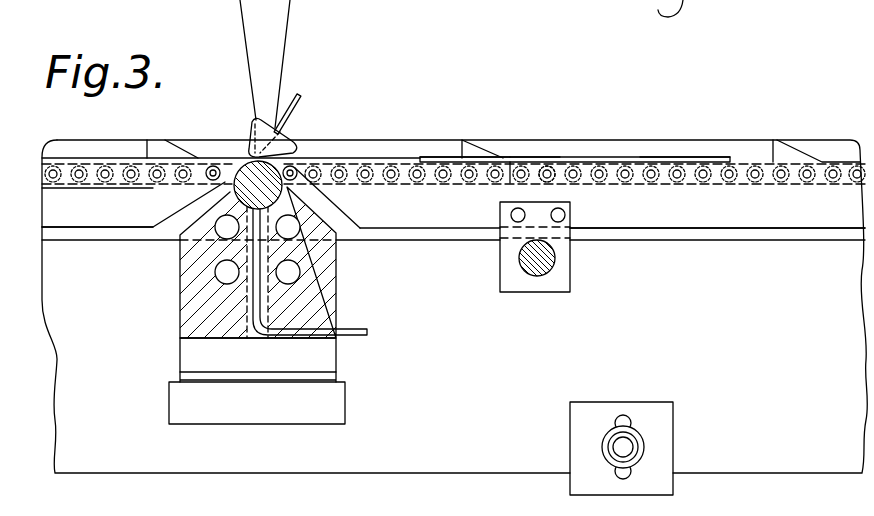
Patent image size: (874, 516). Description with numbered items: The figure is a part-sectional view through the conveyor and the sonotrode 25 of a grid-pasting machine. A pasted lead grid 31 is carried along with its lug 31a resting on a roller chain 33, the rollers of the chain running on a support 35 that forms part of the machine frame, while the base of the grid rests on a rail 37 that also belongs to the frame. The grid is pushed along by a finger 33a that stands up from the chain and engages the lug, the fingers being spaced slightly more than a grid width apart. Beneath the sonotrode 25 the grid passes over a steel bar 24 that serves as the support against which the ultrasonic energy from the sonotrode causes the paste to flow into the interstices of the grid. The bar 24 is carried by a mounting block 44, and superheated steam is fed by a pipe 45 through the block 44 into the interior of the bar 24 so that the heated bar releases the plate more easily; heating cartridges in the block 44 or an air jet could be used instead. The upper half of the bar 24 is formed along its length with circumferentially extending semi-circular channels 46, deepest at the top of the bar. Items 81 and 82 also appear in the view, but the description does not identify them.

The bar 24 is at (290, 167).
The sonotrode 25 is at (283, 18).
The grid 31 is at (528, 157).
The lug 31a is at (443, 158).
The roller chain 33 is at (556, 168).
The finger 33a is at (646, 162).
The support 35 is at (165, 227).
The rail 37 is at (705, 217).
The mounting block 44 is at (325, 262).
The pipe 45 is at (367, 333).
The semi-circular channels 46 is at (247, 163).
The stylus 81 is at (300, 95).
The pad 82 is at (253, 122).